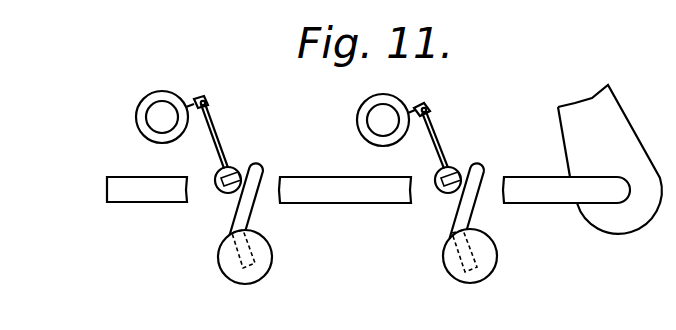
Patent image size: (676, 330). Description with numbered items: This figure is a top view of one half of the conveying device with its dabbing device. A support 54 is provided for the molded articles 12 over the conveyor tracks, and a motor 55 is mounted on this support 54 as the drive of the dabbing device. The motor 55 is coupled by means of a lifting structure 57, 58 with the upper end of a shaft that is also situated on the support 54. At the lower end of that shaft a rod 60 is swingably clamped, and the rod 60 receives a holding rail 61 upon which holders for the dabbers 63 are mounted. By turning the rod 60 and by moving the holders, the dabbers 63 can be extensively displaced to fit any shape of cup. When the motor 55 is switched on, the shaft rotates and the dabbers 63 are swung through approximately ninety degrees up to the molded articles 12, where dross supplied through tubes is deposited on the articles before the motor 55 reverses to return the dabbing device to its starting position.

The molded articles 12 is at (140, 105).
The dabber 63 is at (193, 98).
The holding rail 61 is at (208, 99).
The rod 60 is at (222, 147).
The lifting structure 58 is at (223, 193).
The lifting structure 57 is at (247, 204).
The motor 55 is at (263, 259).
The support 54 is at (153, 190).